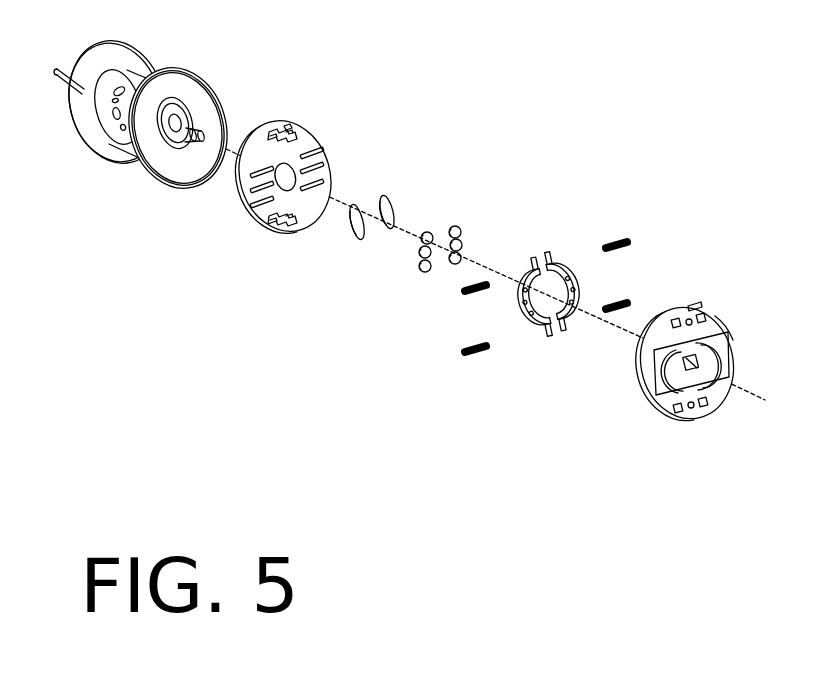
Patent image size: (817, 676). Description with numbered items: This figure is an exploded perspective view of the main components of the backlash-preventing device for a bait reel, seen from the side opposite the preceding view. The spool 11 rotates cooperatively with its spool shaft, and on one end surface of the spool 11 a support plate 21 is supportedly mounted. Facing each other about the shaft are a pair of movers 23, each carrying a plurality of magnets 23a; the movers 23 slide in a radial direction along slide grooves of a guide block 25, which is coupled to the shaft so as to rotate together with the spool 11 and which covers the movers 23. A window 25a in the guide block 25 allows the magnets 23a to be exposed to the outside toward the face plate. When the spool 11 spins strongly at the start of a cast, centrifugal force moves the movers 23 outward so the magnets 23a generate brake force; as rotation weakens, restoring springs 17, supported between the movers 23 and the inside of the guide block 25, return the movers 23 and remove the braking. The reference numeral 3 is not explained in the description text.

The spool shaft axis 3 is at (494, 280).
The spool 11 is at (112, 163).
The support plate 21 is at (257, 232).
The magnets 23a is at (422, 273).
The restoring springs 17 is at (477, 357).
The movers 23 is at (540, 337).
The guide block 25 is at (657, 419).
The window 25a is at (737, 333).